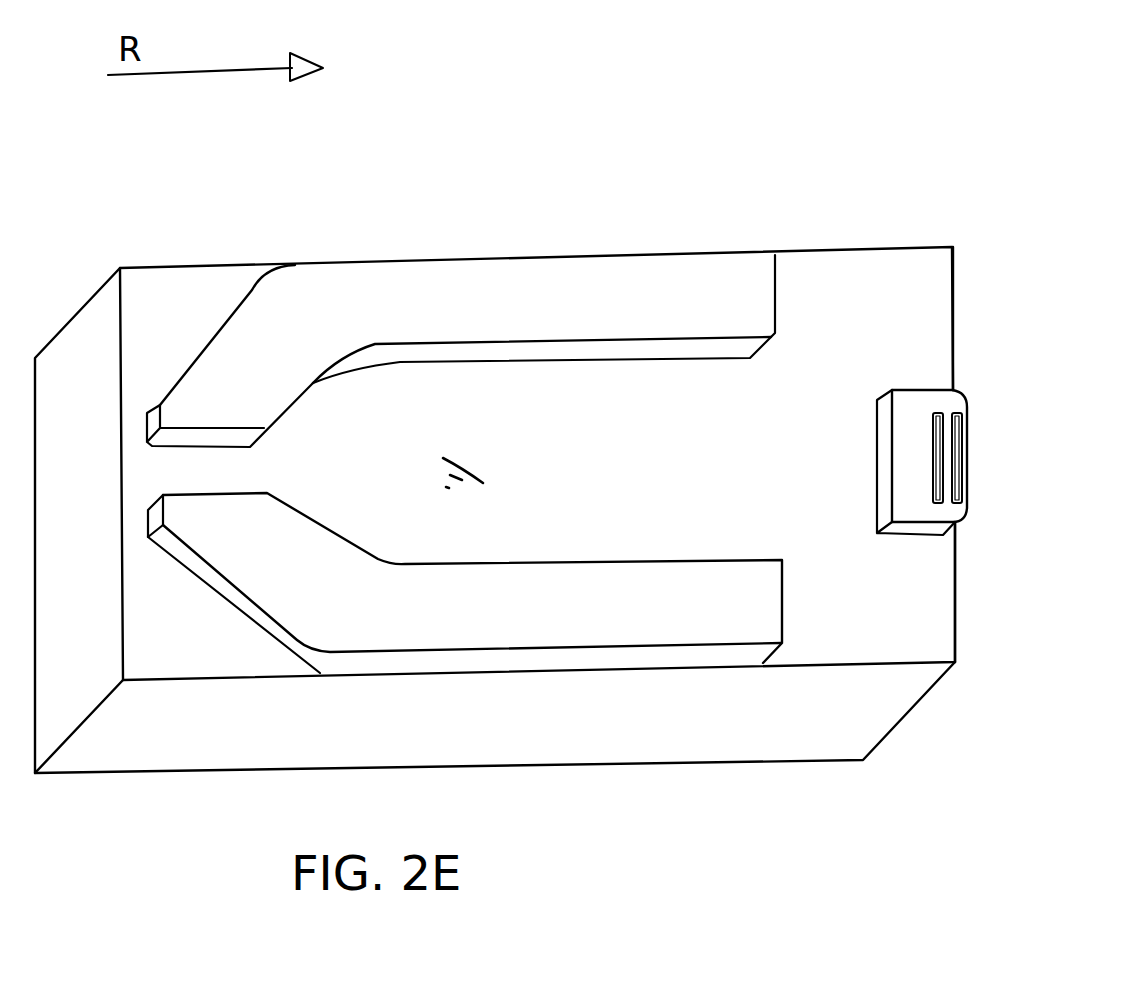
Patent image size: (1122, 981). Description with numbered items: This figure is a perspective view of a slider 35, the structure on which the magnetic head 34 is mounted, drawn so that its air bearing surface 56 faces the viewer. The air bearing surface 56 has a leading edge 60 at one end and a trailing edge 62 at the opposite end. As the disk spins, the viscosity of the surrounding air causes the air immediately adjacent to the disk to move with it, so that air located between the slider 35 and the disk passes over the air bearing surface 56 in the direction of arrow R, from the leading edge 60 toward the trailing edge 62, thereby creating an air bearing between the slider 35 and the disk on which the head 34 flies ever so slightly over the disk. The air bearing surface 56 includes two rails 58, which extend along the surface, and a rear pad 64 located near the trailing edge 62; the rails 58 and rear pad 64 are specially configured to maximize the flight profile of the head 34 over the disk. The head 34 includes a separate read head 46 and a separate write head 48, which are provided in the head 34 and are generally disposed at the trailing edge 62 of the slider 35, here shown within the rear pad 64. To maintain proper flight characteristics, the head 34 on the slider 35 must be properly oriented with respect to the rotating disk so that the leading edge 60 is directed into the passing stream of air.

The slider 35 is at (910, 175).
The rails 58 is at (625, 297).
The air bearing surface 56 is at (467, 468).
The leading edge 60 is at (120, 412).
The rear pad 64 is at (907, 487).
The magnetic head 34 is at (1009, 411).
The read head 46 is at (935, 437).
The write head 48 is at (965, 427).
The trailing edge 62 is at (957, 573).